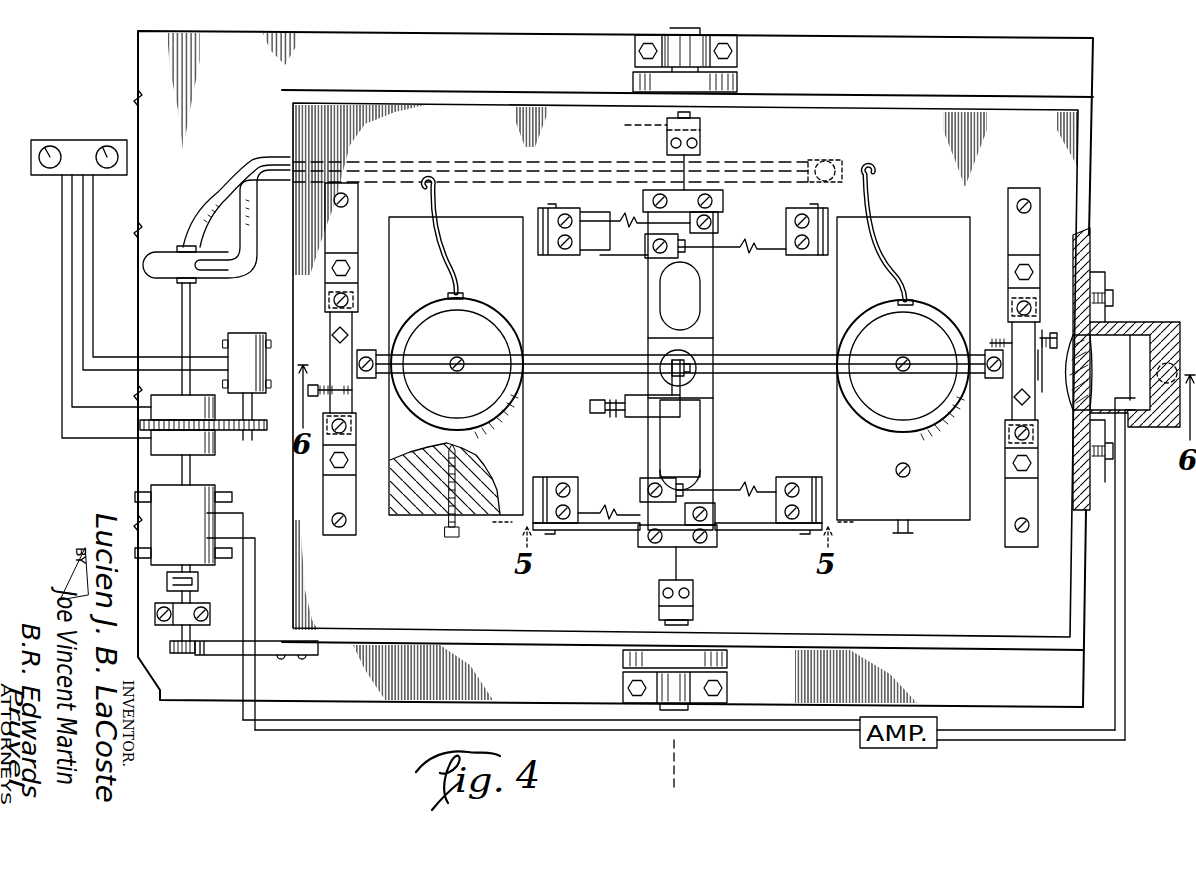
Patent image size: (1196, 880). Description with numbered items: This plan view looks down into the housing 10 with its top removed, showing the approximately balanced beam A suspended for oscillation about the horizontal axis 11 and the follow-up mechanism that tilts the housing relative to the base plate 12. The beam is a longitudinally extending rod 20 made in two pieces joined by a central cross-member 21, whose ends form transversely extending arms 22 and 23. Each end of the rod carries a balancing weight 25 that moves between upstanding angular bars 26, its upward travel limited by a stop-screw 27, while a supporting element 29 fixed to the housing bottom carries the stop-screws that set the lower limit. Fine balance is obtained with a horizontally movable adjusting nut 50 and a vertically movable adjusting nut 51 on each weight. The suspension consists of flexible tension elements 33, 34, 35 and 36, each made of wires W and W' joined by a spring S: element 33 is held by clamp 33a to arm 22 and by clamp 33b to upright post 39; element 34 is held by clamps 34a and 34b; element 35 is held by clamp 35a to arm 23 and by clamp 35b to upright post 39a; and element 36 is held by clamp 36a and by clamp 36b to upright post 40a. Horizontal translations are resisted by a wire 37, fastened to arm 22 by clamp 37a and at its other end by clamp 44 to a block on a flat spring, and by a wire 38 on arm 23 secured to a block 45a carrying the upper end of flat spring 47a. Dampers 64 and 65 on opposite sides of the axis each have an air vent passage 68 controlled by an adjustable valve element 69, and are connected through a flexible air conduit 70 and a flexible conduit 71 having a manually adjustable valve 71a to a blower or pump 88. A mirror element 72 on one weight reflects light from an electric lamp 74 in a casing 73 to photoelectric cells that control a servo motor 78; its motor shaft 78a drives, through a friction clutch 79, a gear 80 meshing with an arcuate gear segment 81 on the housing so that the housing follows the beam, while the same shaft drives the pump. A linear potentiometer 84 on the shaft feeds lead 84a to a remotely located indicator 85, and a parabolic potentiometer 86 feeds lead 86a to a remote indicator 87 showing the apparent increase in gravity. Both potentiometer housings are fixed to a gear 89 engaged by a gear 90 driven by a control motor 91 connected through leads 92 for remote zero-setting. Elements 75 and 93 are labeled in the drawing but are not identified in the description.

The housing 10 is at (898, 648).
The horizontal axis 11 is at (676, 760).
The base plate 12 is at (1093, 62).
The rod 20 is at (592, 357).
The central cross-member 21 is at (714, 342).
The transversely extending arm 22 is at (708, 448).
The transversely extending arm 23 is at (650, 304).
The balancing weight 25 is at (333, 358).
The upstanding angular bar 26 is at (1035, 466).
The stop-screw 27 is at (347, 298).
The supporting element 29 is at (327, 493).
The flexible tension element 33 is at (580, 527).
The clamp 33a is at (716, 518).
The clamp 33b is at (575, 477).
The flexible tension element 34 is at (780, 528).
The clamp 34a is at (690, 480).
The clamp 34b is at (795, 477).
The flexible tension element 35 is at (590, 212).
The clamp 35a is at (718, 222).
The clamp 35b is at (562, 207).
The flexible tension element 36 is at (775, 247).
The clamp 36a is at (680, 258).
The clamp 36b is at (808, 258).
The flexible wire element 37 is at (682, 566).
The clamp 37a is at (718, 548).
The flexible wire element 38 is at (686, 162).
The upright post 39 is at (535, 475).
The upright post 39a is at (538, 215).
The upright post 40a is at (828, 218).
The clamp 44 is at (694, 600).
The block 45a is at (700, 135).
The flat spring 47a is at (630, 125).
The horizontally movable adjusting nut 50 is at (318, 403).
The vertically movable adjusting nut 51 is at (334, 332).
The damper 64 is at (472, 300).
The damper 65 is at (926, 302).
The air vent passage 68 is at (465, 449).
The adjustable valve element 69 is at (447, 536).
The flexible air conduit 70 is at (452, 242).
The flexible conduit 71 is at (880, 194).
The manually adjustable valve 71a is at (836, 158).
The mirror element 72 is at (1043, 385).
The casing 73 is at (1108, 322).
The electric lamp 74 is at (1158, 415).
The lens 75 is at (1090, 372).
The servo motor 78 is at (190, 536).
The motor shaft 78a is at (186, 298).
The friction clutch 79 is at (198, 582).
The gear 80 is at (182, 654).
The arcuate gear segment 81 is at (228, 656).
The linear potentiometer 84 is at (151, 440).
The lead 84a is at (62, 400).
The remotely located indicator 85 is at (44, 146).
The parabolic potentiometer 86 is at (183, 407).
The lead 86a is at (104, 392).
The remote indicator 87 is at (112, 146).
The blower or pump 88 is at (163, 252).
The gear 89 is at (224, 430).
The gear 90 is at (252, 432).
The control motor 91 is at (246, 338).
The leads 92 is at (93, 262).
The gauge panel 93 is at (72, 140).